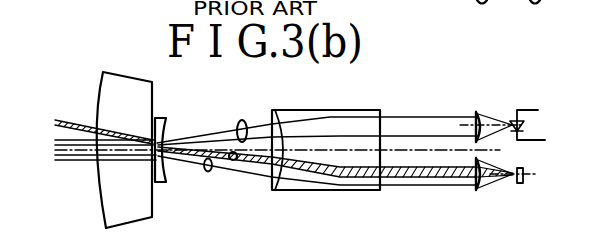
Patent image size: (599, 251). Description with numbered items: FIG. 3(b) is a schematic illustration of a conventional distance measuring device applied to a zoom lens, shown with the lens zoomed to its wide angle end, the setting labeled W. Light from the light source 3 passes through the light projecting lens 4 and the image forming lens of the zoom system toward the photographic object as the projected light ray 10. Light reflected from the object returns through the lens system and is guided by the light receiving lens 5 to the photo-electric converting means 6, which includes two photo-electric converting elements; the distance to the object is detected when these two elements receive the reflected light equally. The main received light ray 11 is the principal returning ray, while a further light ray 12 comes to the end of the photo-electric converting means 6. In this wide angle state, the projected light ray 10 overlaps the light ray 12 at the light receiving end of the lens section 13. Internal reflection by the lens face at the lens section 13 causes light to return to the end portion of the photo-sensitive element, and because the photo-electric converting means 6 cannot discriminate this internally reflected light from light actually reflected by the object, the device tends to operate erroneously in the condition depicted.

The window / incident light W is at (88, 138).
The lens section 13 is at (160, 138).
The projected light ray 10 is at (244, 120).
The main received light ray 11 is at (208, 171).
The light ray 12 is at (236, 160).
The light projecting lens 4 is at (477, 110).
The light source 3 is at (522, 118).
The light receiving lens 5 is at (477, 192).
The photo-electric converting means 6 is at (524, 185).